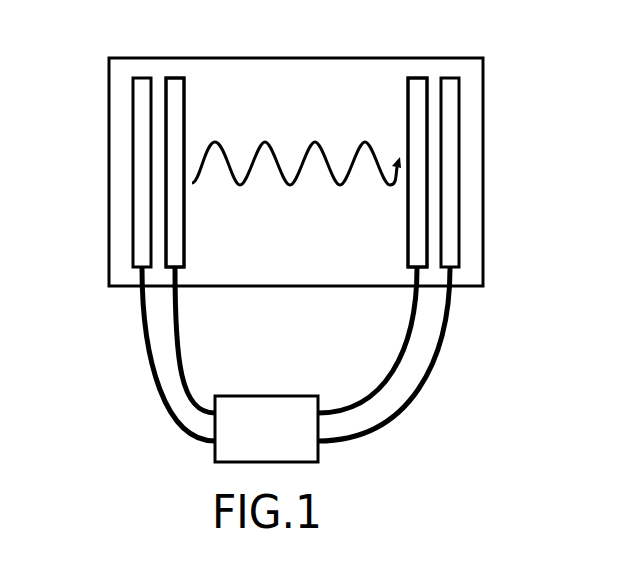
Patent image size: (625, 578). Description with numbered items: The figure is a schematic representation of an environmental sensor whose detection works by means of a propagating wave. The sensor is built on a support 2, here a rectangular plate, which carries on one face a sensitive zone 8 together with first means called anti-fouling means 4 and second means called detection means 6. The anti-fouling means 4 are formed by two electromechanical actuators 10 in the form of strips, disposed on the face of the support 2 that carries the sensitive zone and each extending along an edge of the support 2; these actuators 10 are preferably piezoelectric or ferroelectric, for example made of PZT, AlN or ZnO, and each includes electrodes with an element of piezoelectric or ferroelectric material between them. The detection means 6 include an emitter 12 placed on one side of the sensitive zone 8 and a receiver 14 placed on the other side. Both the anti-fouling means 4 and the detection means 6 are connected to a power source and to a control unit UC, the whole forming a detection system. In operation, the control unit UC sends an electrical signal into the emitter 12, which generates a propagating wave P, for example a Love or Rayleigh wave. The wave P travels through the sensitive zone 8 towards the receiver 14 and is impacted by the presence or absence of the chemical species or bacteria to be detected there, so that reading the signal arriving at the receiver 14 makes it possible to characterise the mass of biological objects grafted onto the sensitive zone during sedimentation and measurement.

The support 2 is at (290, 292).
The anti-fouling means 4 is at (140, 274).
The detection means 6 is at (192, 92).
The sensitive zone 8 is at (288, 153).
The electromechanical actuators 10 is at (138, 159).
The emitter 12 is at (176, 88).
The receiver 14 is at (417, 88).
The propagating wave P is at (328, 176).
The control unit UC is at (296, 402).